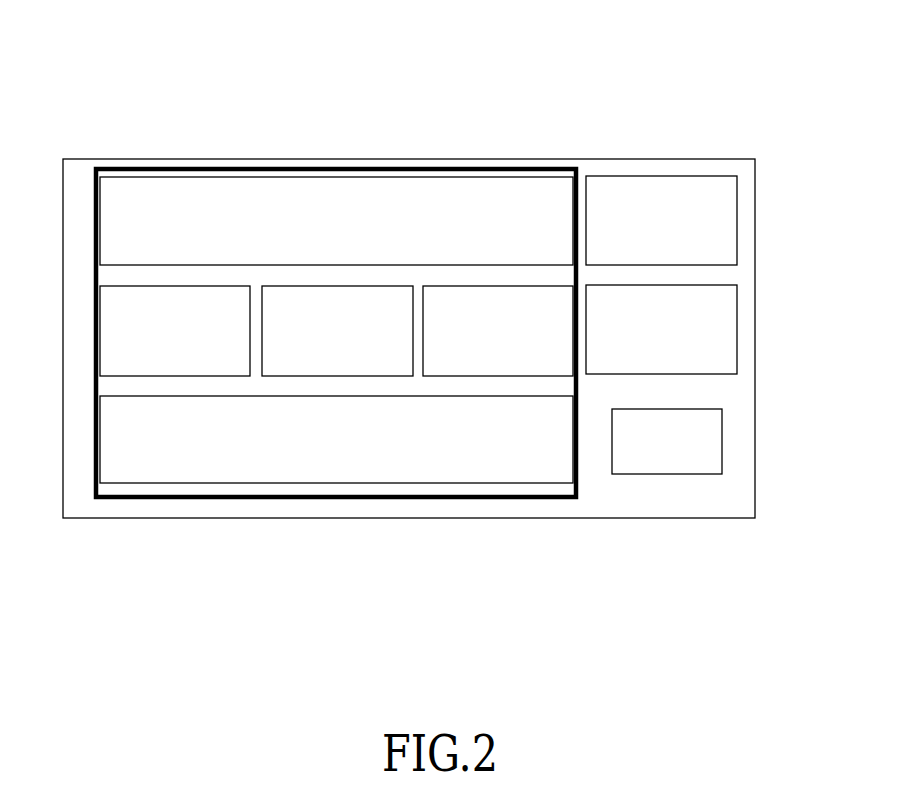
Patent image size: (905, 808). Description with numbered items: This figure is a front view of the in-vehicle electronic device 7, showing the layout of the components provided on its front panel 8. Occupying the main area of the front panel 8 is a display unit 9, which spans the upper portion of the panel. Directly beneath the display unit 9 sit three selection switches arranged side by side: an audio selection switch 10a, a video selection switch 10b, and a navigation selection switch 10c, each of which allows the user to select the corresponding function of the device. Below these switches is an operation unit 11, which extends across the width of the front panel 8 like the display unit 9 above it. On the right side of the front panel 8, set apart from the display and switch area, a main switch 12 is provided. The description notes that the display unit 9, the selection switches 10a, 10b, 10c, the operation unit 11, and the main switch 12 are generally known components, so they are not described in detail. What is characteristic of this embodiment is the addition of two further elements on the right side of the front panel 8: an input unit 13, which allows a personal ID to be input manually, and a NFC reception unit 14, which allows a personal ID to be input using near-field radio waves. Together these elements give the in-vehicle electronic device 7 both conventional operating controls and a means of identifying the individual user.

The in-vehicle electronic device 7 is at (85, 131).
The front panel 8 is at (135, 503).
The display unit 9 is at (512, 188).
The audio selection switch 10a is at (173, 365).
The video selection switch 10b is at (403, 365).
The navigation selection switch 10c is at (499, 365).
The operation unit 11 is at (337, 472).
The main switch 12 is at (712, 442).
The input unit 13 is at (727, 352).
The NFC reception unit 14 is at (727, 243).